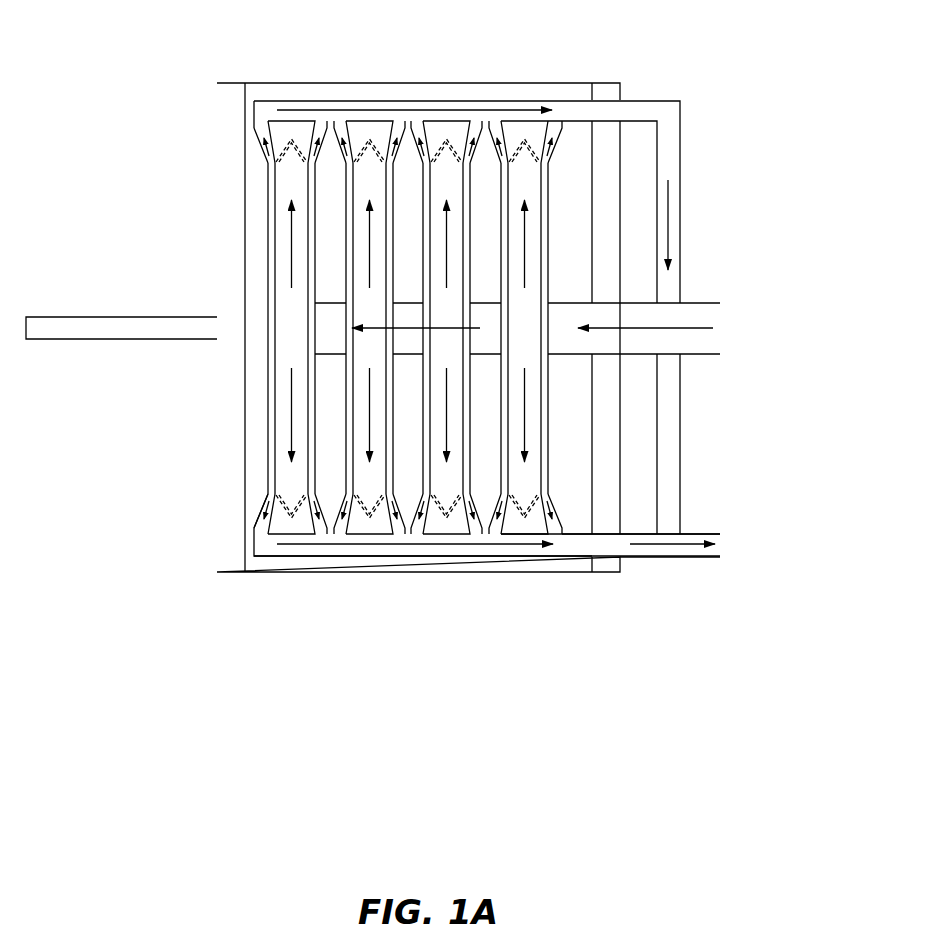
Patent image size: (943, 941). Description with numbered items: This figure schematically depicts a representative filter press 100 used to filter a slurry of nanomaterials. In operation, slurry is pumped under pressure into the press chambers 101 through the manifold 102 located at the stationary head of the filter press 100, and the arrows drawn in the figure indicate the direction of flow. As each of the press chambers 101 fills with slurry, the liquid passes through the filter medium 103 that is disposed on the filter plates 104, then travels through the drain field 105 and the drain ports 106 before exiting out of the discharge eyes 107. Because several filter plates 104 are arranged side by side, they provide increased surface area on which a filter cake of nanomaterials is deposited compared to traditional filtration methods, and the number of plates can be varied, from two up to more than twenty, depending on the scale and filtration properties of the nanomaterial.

The filter press 100 is at (311, 62).
The press chambers 101 is at (456, 327).
The manifold 102 is at (723, 359).
The filter medium 103 is at (305, 230).
The filter plates 104 is at (268, 267).
The drain field 105 is at (268, 297).
The drain ports 106 is at (268, 503).
The discharge eyes 107 is at (726, 565).